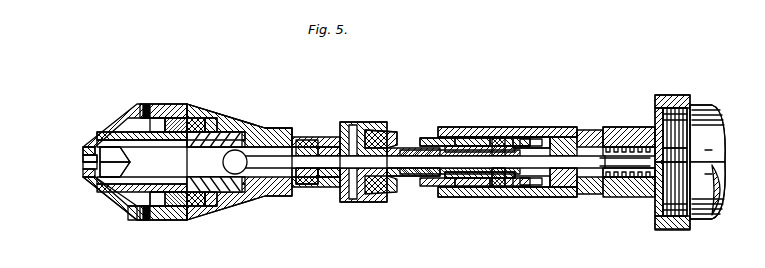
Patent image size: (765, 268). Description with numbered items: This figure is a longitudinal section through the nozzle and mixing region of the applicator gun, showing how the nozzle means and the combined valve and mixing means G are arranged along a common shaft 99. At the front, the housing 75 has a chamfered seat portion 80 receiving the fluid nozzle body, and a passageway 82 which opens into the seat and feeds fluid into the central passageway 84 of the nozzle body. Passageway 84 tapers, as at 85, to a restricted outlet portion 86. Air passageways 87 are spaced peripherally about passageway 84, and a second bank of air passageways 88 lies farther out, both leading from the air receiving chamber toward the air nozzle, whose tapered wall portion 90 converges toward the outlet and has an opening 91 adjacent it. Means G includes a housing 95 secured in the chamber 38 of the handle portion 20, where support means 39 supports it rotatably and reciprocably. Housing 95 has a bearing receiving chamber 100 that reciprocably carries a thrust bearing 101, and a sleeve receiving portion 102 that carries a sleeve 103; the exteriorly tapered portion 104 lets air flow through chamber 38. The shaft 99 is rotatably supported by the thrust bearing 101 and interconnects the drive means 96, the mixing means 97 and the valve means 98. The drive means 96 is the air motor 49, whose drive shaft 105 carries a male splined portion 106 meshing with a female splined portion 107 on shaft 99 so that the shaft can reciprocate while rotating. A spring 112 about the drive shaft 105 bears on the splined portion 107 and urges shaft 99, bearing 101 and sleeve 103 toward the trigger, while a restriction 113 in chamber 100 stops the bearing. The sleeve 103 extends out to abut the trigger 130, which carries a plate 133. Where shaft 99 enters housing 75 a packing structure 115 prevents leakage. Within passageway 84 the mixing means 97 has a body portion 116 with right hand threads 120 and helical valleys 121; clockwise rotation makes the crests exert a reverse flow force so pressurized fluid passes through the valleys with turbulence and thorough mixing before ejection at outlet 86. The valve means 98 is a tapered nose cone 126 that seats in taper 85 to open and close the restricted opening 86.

The handle portion 20 is at (478, 138).
The chamber 38 is at (545, 128).
The support means 39 is at (547, 202).
The air motor 49 is at (683, 230).
The housing 75 is at (274, 124).
The chamfered seat portion 80 is at (212, 125).
The passageway 82 is at (255, 113).
The central passageway 84 is at (196, 135).
The taper 85 is at (103, 192).
The restricted outlet portion 86 is at (100, 165).
The passageways 87 is at (120, 210).
The second bank of air passageways 88 is at (138, 218).
The tapered wall portion 90 is at (83, 148).
The opening 91 is at (83, 158).
The housing 95 is at (582, 190).
The drive means 96 is at (704, 88).
The mixing means 97 is at (215, 198).
The valve means 98 is at (145, 114).
The shaft 99 is at (302, 185).
The bearing receiving chamber 100 is at (522, 140).
The thrust bearing 101 is at (498, 188).
The sleeve receiving portion 102 is at (460, 142).
The sleeve 103 is at (405, 178).
The exteriorly tapered portion 104 is at (472, 188).
The drive shaft 105 is at (672, 150).
The male splined portion 106 is at (670, 160).
The female splined portion 107 is at (620, 147).
The spring 112 is at (632, 180).
The restriction 113 is at (483, 180).
The packing structure 115 is at (326, 180).
The body portion 116 is at (200, 202).
The right hand threads 120 is at (176, 212).
The helical valleys 121 is at (176, 118).
The tapered nose cone 126 is at (104, 132).
The trigger 130 is at (365, 202).
The plate 133 is at (380, 136).